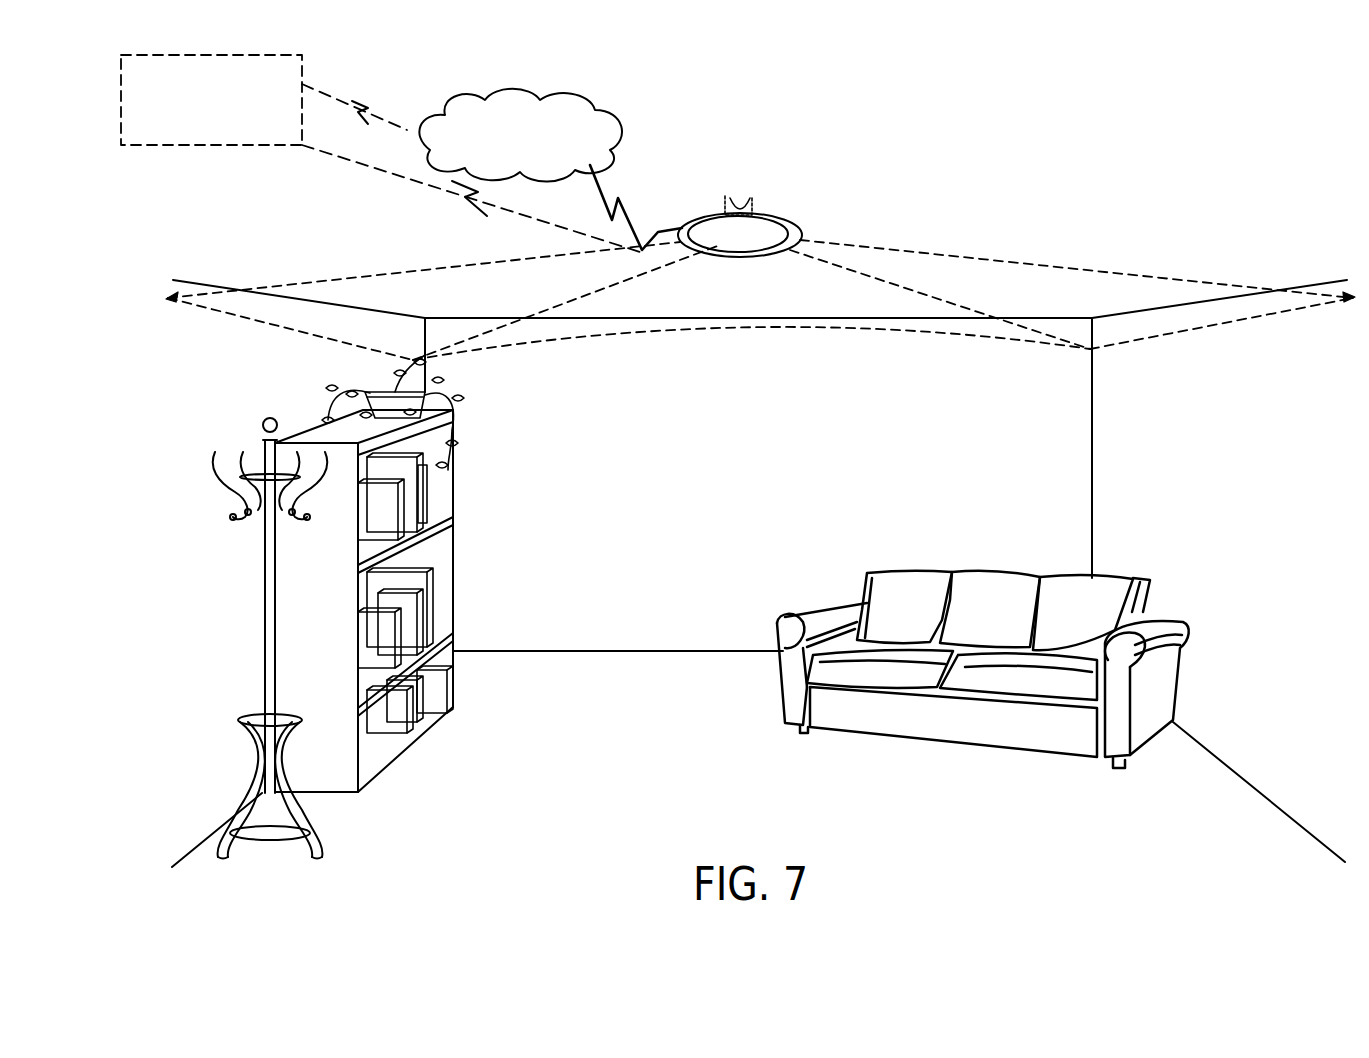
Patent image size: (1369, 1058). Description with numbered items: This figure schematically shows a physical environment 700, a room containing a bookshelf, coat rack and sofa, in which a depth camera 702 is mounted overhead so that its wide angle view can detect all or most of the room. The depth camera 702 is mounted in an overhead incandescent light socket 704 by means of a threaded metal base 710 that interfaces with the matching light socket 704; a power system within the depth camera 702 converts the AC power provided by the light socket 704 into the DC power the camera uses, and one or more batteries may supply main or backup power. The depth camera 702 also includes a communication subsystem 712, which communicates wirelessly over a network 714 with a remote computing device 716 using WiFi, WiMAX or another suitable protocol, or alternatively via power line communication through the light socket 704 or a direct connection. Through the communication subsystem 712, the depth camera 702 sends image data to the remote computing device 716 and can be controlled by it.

The physical environment 700 is at (1075, 126).
The depth camera 702 is at (797, 214).
The light socket 704 is at (752, 201).
The threaded metal base 710 is at (741, 194).
The communication subsystem 712 is at (661, 228).
The network 714 is at (597, 146).
The remote computing device 716 is at (275, 137).